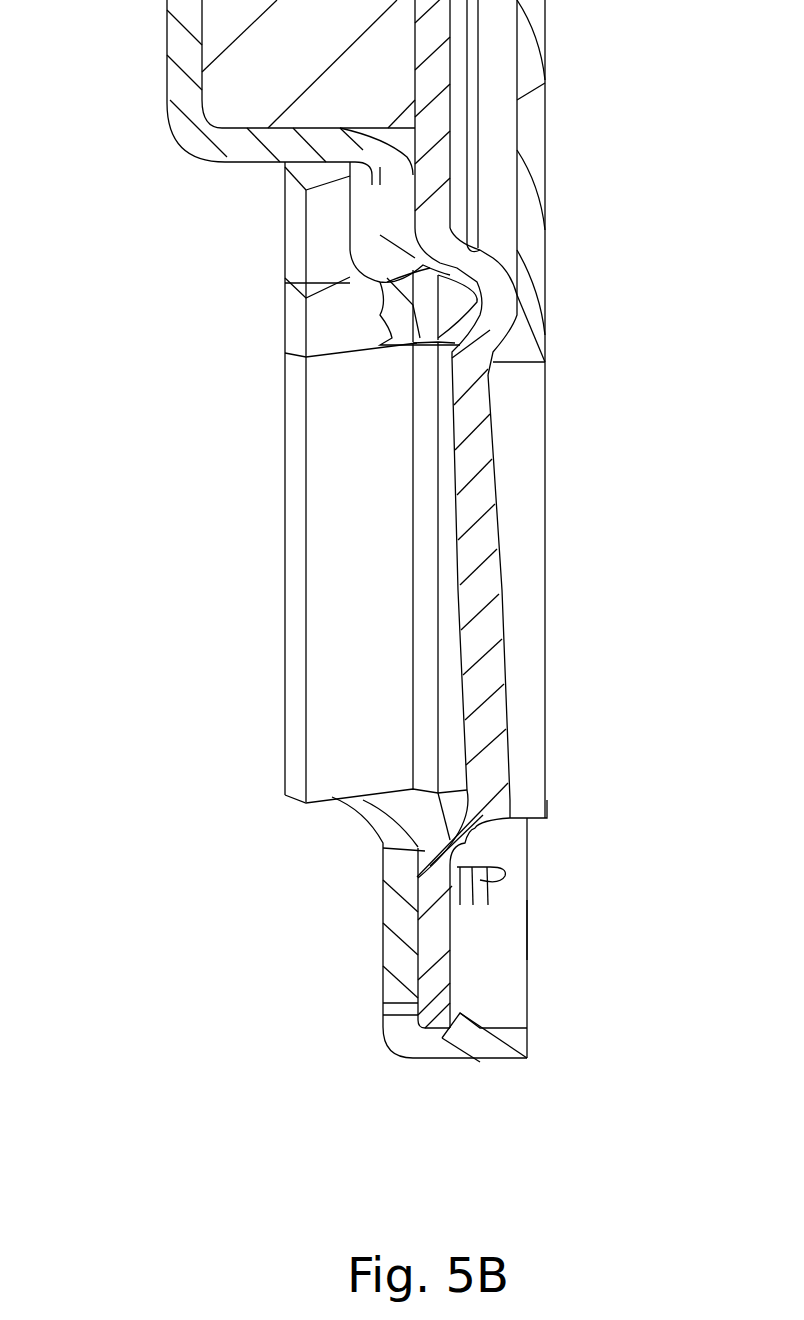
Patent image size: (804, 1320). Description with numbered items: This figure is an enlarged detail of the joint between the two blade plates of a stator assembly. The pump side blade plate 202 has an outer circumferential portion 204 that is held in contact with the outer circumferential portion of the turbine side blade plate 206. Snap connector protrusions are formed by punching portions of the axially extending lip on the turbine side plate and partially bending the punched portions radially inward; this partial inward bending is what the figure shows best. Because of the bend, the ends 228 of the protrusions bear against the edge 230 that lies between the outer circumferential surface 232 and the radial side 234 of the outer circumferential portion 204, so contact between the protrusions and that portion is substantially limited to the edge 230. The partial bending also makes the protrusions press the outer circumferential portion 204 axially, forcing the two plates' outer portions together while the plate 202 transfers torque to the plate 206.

The pump side blade plate 202 is at (493, 252).
The outer circumferential portion 204 is at (438, 923).
The turbine side blade plate 206 is at (177, 142).
The ends 228 is at (475, 1045).
The edge 230 is at (450, 1036).
The outer circumferential surface 232 is at (433, 1033).
The radial side 234 is at (453, 967).